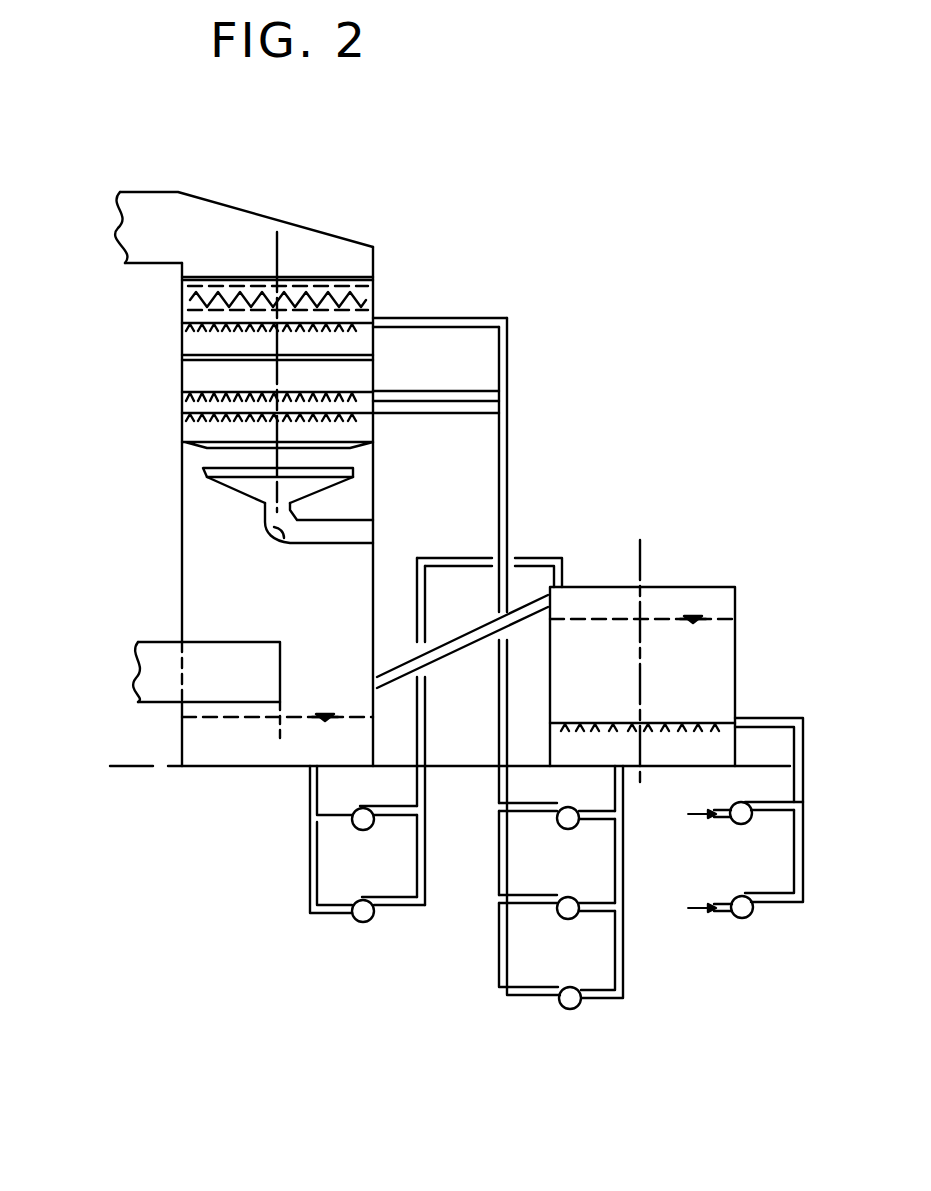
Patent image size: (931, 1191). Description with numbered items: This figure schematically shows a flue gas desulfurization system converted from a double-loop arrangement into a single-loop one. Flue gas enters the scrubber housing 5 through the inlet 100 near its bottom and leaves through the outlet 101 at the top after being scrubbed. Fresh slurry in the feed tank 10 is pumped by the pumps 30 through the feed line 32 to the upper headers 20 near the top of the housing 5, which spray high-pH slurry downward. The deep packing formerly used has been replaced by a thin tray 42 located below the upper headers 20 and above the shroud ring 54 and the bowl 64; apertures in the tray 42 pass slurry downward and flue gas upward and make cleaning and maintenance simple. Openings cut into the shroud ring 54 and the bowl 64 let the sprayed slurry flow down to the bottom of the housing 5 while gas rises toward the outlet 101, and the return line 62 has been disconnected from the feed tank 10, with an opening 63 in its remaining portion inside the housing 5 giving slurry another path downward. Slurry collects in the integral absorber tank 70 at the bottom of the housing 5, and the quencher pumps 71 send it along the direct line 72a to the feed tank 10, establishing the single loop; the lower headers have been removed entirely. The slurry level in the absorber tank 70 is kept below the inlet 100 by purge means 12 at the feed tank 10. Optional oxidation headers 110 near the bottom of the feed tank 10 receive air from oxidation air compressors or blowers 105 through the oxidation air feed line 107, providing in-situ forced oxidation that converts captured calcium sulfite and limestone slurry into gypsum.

The housing 5 is at (344, 202).
The outlet 101 is at (150, 215).
The thin tray 42 is at (182, 355).
The upper headers 20 is at (377, 391).
The feed line 32 is at (508, 425).
The shroud ring 54 is at (200, 447).
The bowl 64 is at (250, 483).
The return line 62 is at (377, 532).
The opening 63 is at (283, 535).
The inlet 100 is at (163, 670).
The absorber tank 70 is at (225, 752).
The quencher pumps 71 is at (356, 898).
The direct line 72a is at (548, 556).
The feed tank 10 is at (697, 663).
The oxidation headers 110 is at (695, 722).
The purge means 12 is at (548, 748).
The pumps 30 is at (560, 900).
The oxidation air compressors or blowers 105 is at (740, 897).
The oxidation air feed line 107 is at (797, 803).